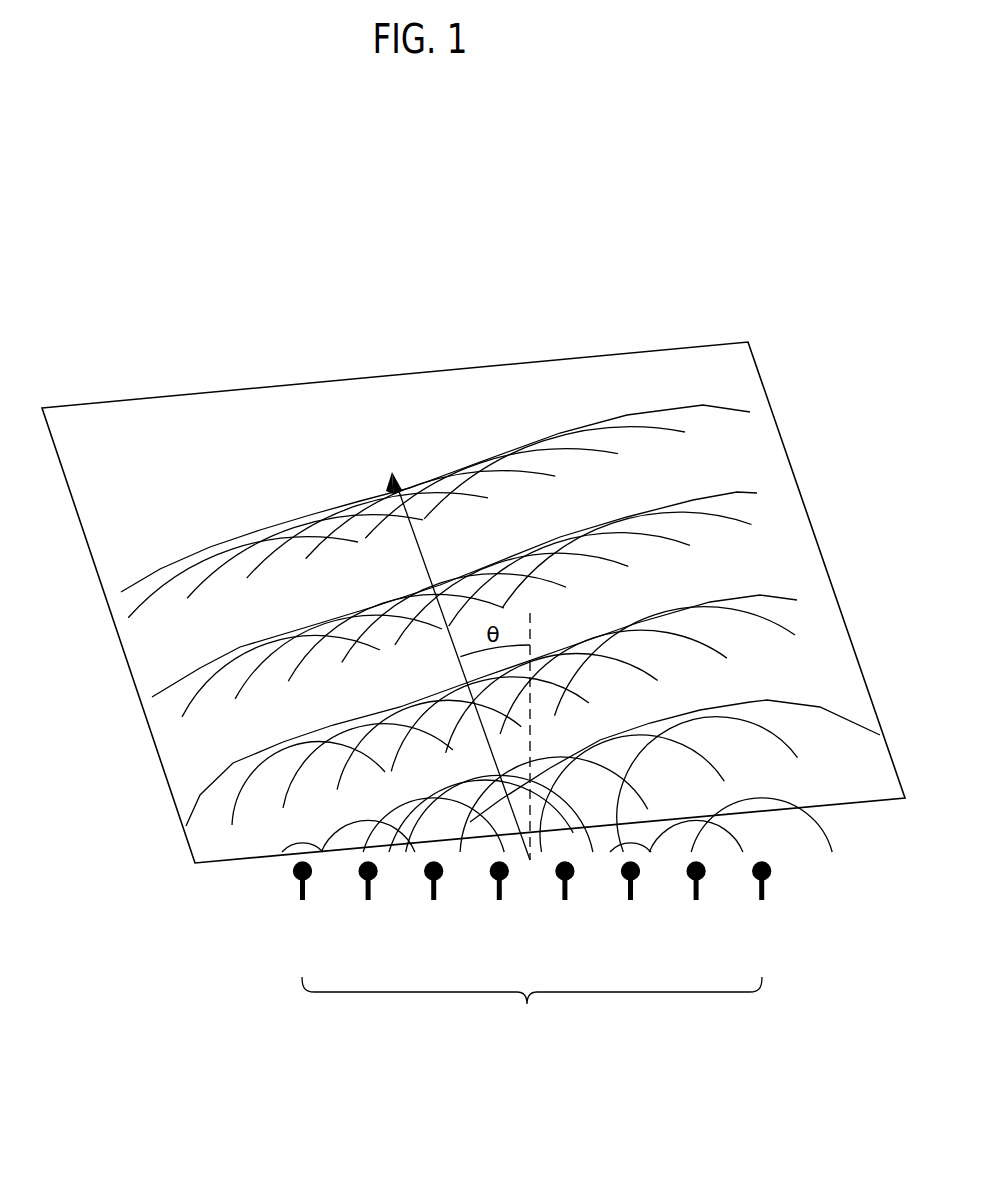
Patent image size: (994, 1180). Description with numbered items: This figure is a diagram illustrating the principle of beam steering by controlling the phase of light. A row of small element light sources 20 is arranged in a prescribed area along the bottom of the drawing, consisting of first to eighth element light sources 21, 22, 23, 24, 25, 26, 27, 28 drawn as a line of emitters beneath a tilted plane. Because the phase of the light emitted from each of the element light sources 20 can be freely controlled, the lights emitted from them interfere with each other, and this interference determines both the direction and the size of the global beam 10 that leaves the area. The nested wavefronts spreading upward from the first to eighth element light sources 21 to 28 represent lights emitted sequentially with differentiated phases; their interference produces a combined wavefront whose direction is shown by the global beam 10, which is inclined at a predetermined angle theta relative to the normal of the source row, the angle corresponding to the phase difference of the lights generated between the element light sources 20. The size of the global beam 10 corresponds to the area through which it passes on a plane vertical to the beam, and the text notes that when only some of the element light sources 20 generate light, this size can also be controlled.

The global beam 10 is at (174, 414).
The element light sources 20 is at (532, 1007).
The first element light source 21 is at (302, 900).
The second element light source 22 is at (368, 900).
The third element light source 23 is at (434, 900).
The fourth element light source 24 is at (499, 900).
The fifth element light source 25 is at (565, 900).
The sixth element light source 26 is at (630, 900).
The seventh element light source 27 is at (696, 900).
The eighth element light source 28 is at (762, 900).